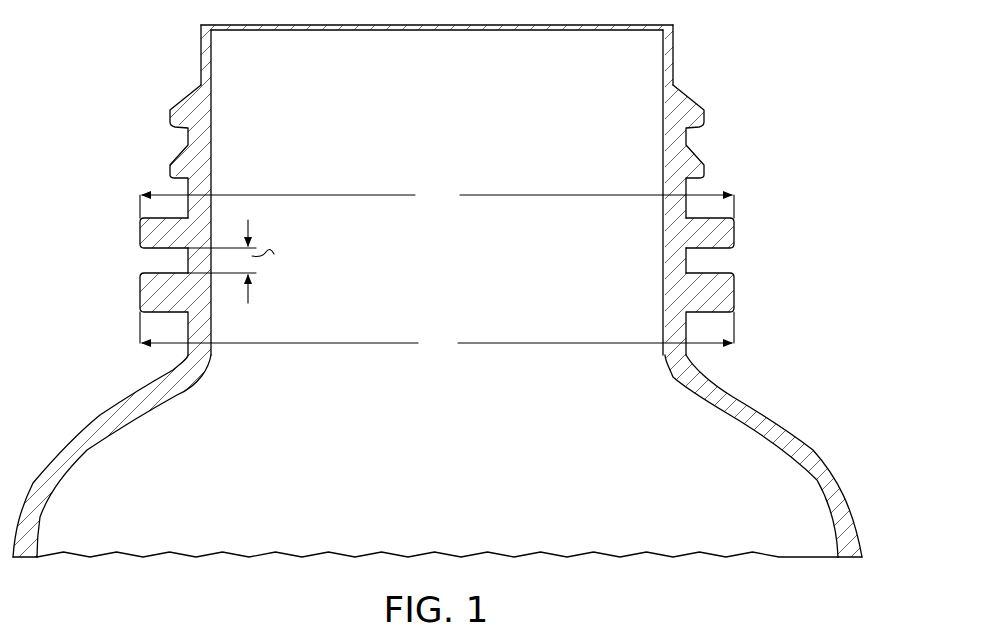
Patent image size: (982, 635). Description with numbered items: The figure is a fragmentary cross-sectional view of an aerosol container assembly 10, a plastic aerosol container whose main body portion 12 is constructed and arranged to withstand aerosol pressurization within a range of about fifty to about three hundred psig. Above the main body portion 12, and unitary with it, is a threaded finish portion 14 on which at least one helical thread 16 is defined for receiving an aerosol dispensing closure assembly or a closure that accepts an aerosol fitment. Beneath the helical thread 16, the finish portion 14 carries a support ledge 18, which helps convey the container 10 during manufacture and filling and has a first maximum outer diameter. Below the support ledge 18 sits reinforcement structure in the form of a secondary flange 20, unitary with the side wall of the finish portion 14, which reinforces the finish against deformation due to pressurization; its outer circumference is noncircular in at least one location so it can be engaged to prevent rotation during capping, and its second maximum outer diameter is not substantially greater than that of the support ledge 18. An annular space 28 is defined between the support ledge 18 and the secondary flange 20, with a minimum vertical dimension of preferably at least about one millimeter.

The aerosol container assembly 10 is at (446, 283).
The main body portion 12 is at (836, 443).
The threaded finish portion 14 is at (710, 81).
The helical thread 16 is at (698, 151).
The support ledge 18 is at (718, 216).
The secondary flange 20 is at (140, 297).
The annular space 28 is at (146, 260).